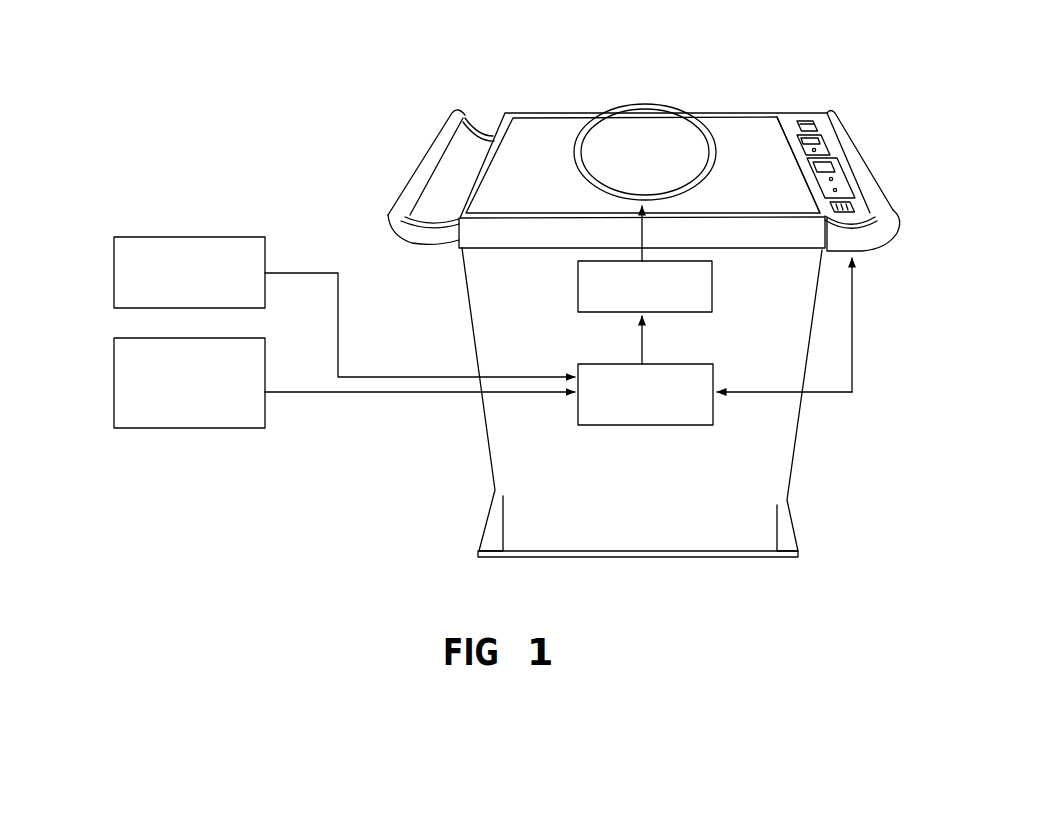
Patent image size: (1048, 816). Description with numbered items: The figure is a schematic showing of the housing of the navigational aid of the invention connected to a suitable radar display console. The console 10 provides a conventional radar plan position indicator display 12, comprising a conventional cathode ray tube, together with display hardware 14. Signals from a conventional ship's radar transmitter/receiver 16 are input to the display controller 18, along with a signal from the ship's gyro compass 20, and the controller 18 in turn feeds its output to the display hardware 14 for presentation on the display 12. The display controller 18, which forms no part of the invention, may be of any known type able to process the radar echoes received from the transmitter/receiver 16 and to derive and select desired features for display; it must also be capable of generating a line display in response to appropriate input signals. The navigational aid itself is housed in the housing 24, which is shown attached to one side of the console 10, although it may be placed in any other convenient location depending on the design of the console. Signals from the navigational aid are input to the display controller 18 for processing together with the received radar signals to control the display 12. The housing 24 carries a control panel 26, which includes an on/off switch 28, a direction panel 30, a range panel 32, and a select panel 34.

The console 10 is at (806, 456).
The radar plan position indicator display 12 is at (640, 122).
The display hardware 14 is at (578, 277).
The ship's radar transmitter/receiver 16 is at (113, 288).
The display controller 18 is at (586, 419).
The ship's gyro compass 20 is at (113, 390).
The housing 24 is at (863, 253).
The control panel 26 is at (790, 123).
The on/off switch 28 is at (804, 116).
The direction panel 30 is at (829, 137).
The range panel 32 is at (849, 166).
The select panel 34 is at (856, 201).